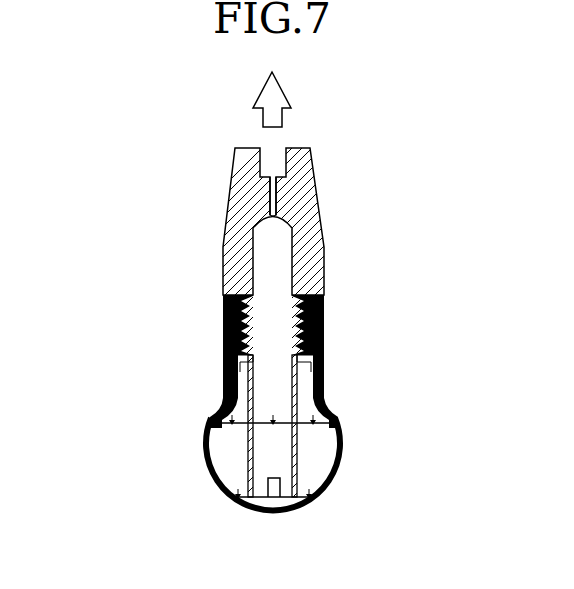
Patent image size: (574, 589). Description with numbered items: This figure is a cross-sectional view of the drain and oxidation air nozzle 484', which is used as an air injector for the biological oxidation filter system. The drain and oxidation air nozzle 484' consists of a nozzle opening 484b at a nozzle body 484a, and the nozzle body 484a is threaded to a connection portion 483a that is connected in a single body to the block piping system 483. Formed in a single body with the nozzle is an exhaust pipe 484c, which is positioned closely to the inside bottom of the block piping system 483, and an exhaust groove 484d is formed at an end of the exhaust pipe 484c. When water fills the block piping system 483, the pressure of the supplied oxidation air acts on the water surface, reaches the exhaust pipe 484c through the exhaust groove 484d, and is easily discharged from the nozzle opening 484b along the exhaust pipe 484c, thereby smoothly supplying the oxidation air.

The drain and oxidation air nozzle 484' is at (223, 319).
The nozzle body 484a is at (307, 237).
The nozzle opening 484b is at (272, 160).
The exhaust pipe 484c is at (298, 452).
The exhaust groove 484d is at (272, 495).
The block piping system 483 is at (206, 471).
The connection portion 483a is at (223, 376).